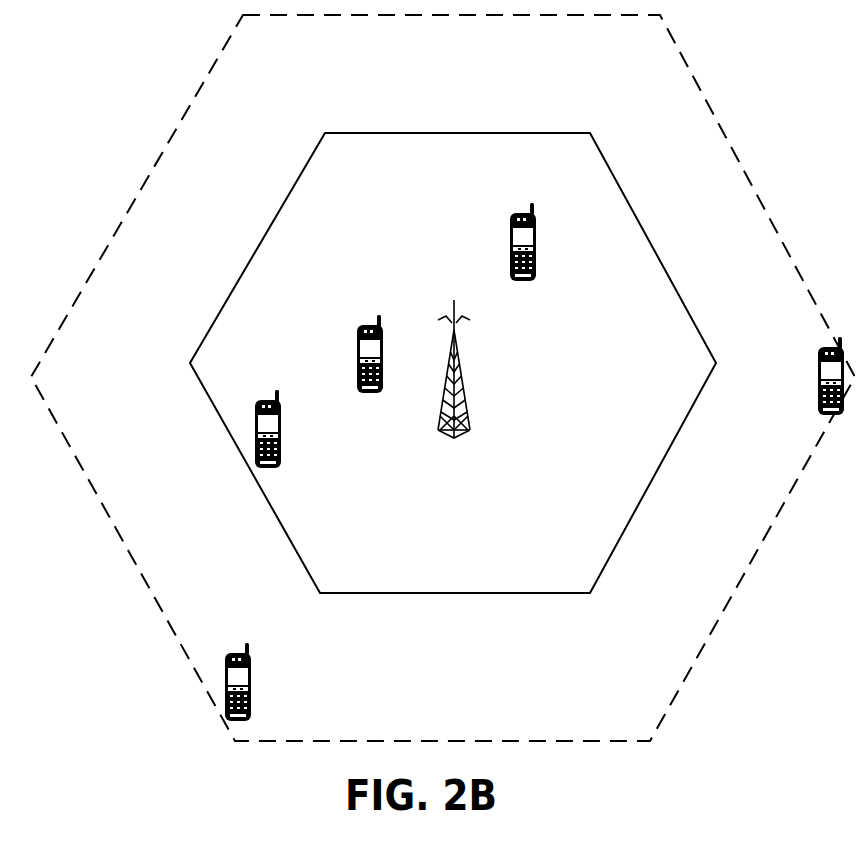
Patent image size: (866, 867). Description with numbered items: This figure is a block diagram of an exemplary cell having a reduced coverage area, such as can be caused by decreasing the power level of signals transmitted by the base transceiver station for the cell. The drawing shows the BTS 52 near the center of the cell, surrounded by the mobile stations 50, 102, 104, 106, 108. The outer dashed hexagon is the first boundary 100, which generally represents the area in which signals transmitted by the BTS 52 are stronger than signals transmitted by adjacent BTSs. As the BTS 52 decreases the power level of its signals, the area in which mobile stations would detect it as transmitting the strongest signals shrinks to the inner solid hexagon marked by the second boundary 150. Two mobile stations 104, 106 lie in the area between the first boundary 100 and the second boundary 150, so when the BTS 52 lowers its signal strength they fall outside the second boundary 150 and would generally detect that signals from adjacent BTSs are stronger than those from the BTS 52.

The first boundary 100 is at (172, 128).
The second boundary 150 is at (270, 218).
The BTS 52 is at (462, 378).
The mobile station 50 is at (358, 352).
The mobile station 102 is at (511, 240).
The mobile station 104 is at (817, 372).
The mobile station 106 is at (226, 678).
The mobile station 108 is at (256, 427).